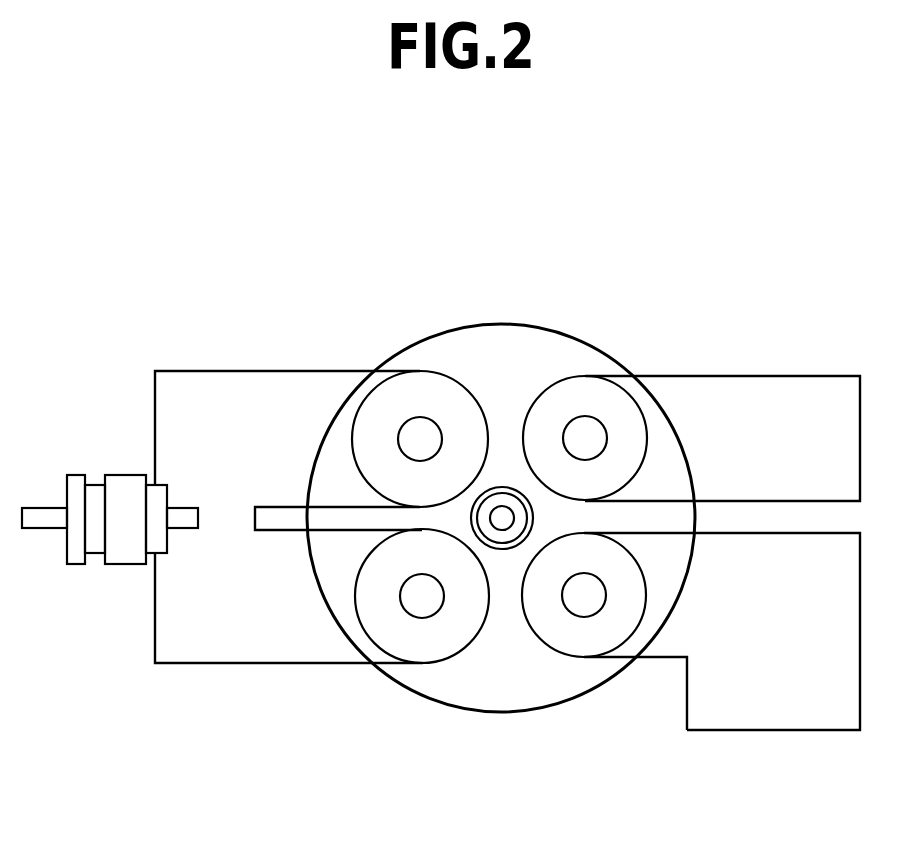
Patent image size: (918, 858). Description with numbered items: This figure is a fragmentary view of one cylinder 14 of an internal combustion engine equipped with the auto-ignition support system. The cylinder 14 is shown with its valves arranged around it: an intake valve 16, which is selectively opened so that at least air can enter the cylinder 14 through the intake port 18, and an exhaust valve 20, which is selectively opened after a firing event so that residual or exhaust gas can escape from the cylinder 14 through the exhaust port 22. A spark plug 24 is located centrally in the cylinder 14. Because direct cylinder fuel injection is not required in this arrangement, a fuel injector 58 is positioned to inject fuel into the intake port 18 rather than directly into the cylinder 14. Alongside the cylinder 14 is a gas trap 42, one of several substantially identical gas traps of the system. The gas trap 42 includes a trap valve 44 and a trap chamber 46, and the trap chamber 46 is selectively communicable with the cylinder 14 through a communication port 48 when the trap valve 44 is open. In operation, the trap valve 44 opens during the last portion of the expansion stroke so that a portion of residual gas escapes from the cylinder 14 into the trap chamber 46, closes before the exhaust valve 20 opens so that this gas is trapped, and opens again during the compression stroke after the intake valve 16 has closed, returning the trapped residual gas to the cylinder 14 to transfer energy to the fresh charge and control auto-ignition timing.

The cylinder 14 is at (497, 722).
The intake valve 16 is at (422, 417).
The intake port 18 is at (192, 371).
The exhaust valve 20 is at (585, 416).
The exhaust port 22 is at (747, 376).
The spark plug 24 is at (501, 549).
The gas trap 42 is at (762, 730).
The trap valve 44 is at (584, 617).
The trap chamber 46 is at (750, 637).
The communication port 48 is at (675, 657).
The fuel injector 58 is at (123, 565).